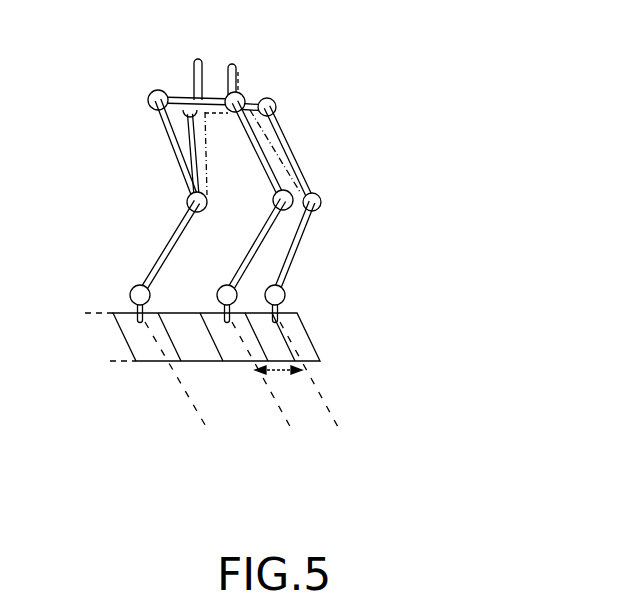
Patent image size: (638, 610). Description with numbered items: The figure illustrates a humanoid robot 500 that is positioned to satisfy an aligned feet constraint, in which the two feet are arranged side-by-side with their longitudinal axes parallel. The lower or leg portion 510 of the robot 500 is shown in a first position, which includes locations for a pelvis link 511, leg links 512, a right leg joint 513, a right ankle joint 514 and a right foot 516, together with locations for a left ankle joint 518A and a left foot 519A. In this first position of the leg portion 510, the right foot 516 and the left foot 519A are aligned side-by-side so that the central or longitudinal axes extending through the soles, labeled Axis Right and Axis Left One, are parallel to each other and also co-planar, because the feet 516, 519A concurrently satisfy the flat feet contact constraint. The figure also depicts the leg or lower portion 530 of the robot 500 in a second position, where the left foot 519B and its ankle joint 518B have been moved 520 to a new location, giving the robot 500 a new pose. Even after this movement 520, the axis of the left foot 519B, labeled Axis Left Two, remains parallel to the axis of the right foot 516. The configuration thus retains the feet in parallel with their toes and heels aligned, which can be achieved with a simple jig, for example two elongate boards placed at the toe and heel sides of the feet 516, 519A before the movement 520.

The robot 500 is at (347, 108).
The leg portion 510 is at (170, 75).
The pelvis link 511 is at (180, 97).
The leg links 512 is at (196, 250).
The right leg joint 513 is at (197, 214).
The right ankle joint 514 is at (130, 285).
The right foot 516 is at (128, 335).
The left ankle joint 518A is at (218, 293).
The ankle joint 518B is at (285, 298).
The left foot 519A is at (213, 345).
The left foot 519B is at (304, 333).
The movement 520 is at (283, 370).
The lower portion 530 is at (310, 237).